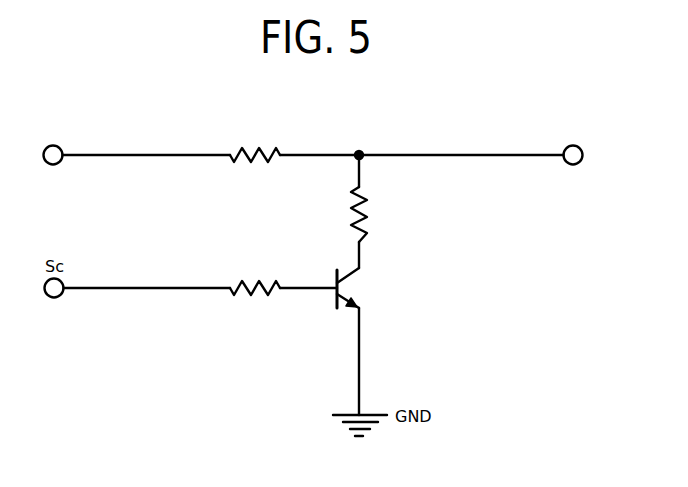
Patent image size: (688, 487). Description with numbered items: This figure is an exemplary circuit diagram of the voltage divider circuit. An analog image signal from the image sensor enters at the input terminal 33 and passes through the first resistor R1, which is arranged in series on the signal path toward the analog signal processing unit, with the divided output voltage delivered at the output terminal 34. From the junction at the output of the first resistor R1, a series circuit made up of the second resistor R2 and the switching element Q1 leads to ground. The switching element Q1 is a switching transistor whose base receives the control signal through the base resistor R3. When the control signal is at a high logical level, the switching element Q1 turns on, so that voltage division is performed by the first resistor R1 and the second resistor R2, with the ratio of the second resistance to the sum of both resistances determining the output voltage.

The input terminal 33 is at (52, 165).
The output terminal 34 is at (571, 165).
The first resistor R1 is at (255, 141).
The second resistor R2 is at (376, 214).
The base resistor R3 is at (255, 275).
The switching element Q1 is at (363, 288).